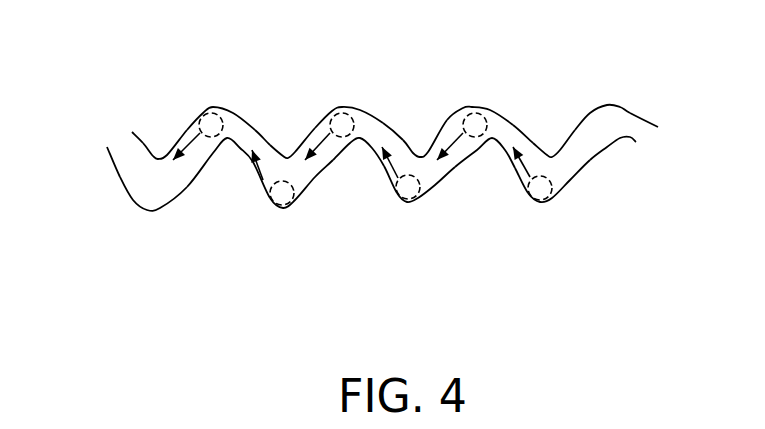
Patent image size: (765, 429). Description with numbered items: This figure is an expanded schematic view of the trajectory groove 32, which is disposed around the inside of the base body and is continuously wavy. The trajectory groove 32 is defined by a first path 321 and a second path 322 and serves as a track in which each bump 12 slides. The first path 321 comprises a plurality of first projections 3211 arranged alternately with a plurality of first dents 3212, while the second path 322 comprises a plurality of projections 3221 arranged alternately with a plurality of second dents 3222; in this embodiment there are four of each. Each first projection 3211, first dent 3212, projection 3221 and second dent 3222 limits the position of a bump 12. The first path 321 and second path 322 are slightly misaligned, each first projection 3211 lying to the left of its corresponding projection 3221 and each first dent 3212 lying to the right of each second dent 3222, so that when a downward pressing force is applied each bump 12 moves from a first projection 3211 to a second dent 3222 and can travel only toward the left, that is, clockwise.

The bump 12 is at (208, 123).
The trajectory groove 32 is at (118, 140).
The first path 321 is at (568, 147).
The first projection 3211 is at (227, 98).
The first dent 3212 is at (155, 139).
The second path 322 is at (580, 173).
The projection 3221 is at (411, 195).
The second dent 3222 is at (355, 239).